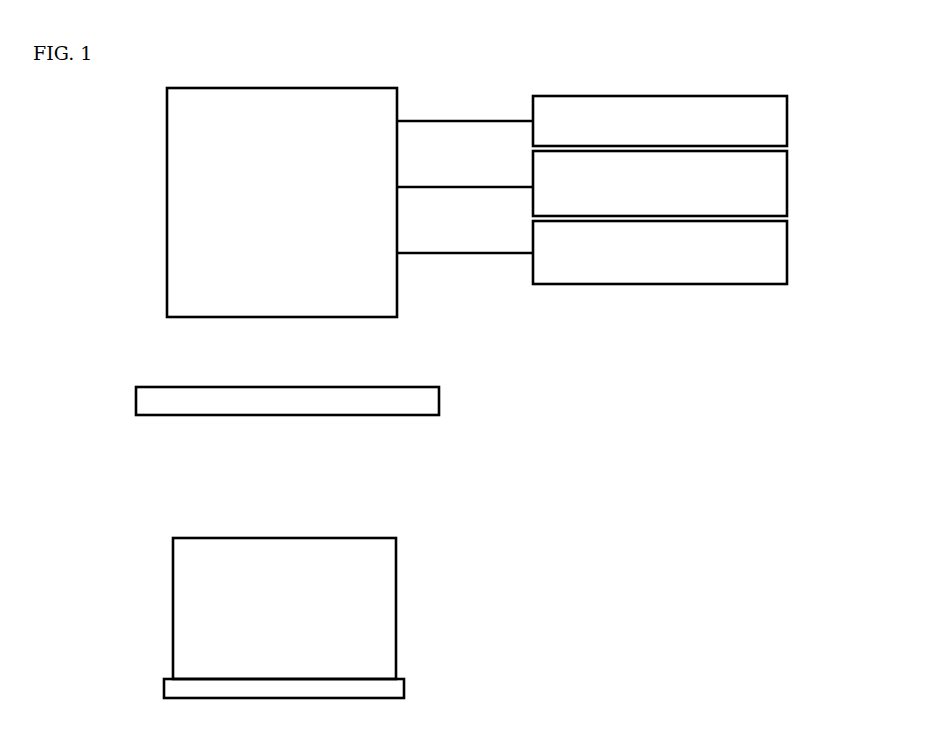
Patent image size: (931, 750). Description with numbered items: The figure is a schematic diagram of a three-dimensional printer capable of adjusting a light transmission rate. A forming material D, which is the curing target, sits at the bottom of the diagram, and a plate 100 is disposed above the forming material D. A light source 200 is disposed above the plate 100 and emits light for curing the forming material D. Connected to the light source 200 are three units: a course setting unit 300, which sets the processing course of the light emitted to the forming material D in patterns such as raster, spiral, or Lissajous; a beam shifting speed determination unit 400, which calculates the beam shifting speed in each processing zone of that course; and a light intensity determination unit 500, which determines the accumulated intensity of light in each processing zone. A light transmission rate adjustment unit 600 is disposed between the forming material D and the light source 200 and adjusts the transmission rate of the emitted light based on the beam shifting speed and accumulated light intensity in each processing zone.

The plate 100 is at (180, 688).
The light source 200 is at (190, 150).
The course setting unit 300 is at (789, 121).
The beam shifting speed determination unit 400 is at (789, 188).
The light intensity determination unit 500 is at (789, 256).
The light transmission rate adjustment unit 600 is at (148, 400).
The forming material D is at (190, 599).